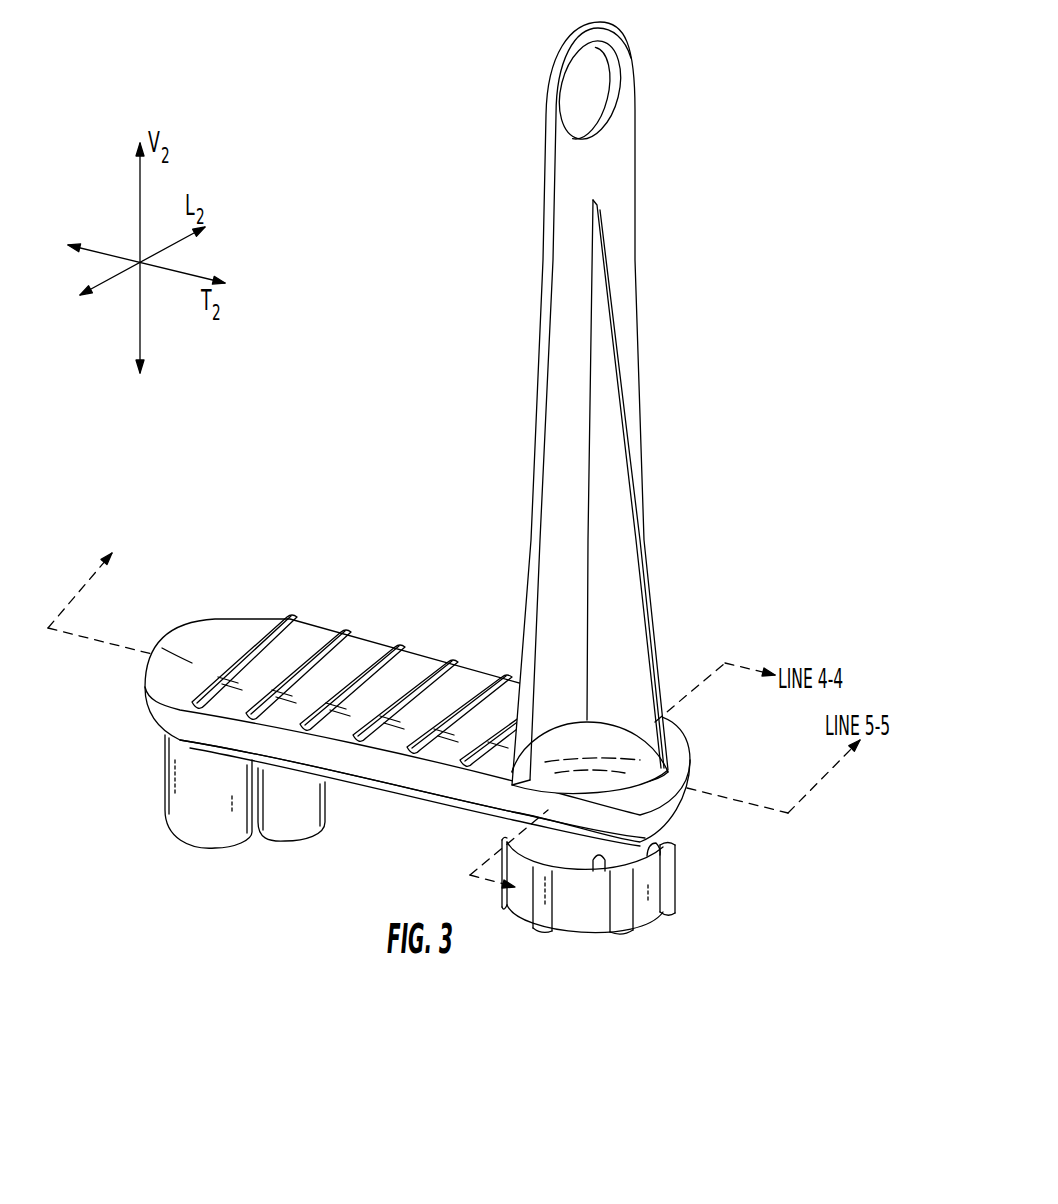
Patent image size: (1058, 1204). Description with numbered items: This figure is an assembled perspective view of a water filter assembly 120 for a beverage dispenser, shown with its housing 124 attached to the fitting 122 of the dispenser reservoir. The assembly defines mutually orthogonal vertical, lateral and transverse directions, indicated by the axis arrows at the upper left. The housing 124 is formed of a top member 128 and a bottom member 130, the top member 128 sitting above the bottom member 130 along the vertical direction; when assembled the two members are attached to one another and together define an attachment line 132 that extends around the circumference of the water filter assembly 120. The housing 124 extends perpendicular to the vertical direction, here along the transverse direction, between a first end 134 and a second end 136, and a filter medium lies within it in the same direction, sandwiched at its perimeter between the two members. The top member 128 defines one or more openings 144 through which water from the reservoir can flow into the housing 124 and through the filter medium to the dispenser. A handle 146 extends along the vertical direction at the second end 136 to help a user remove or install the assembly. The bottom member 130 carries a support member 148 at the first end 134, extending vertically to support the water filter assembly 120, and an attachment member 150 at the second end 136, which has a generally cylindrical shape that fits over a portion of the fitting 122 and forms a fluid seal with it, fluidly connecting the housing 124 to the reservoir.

The water filter assembly 120 is at (363, 348).
The fitting 122 is at (624, 887).
The housing 124 is at (198, 804).
The top member 128 is at (387, 710).
The bottom member 130 is at (410, 790).
The attachment line 132 is at (178, 713).
The first end 134 is at (222, 893).
The second end 136 is at (616, 985).
The openings 144 is at (430, 664).
The handle 146 is at (686, 428).
The support member 148 is at (188, 826).
The attachment member 150 is at (637, 838).